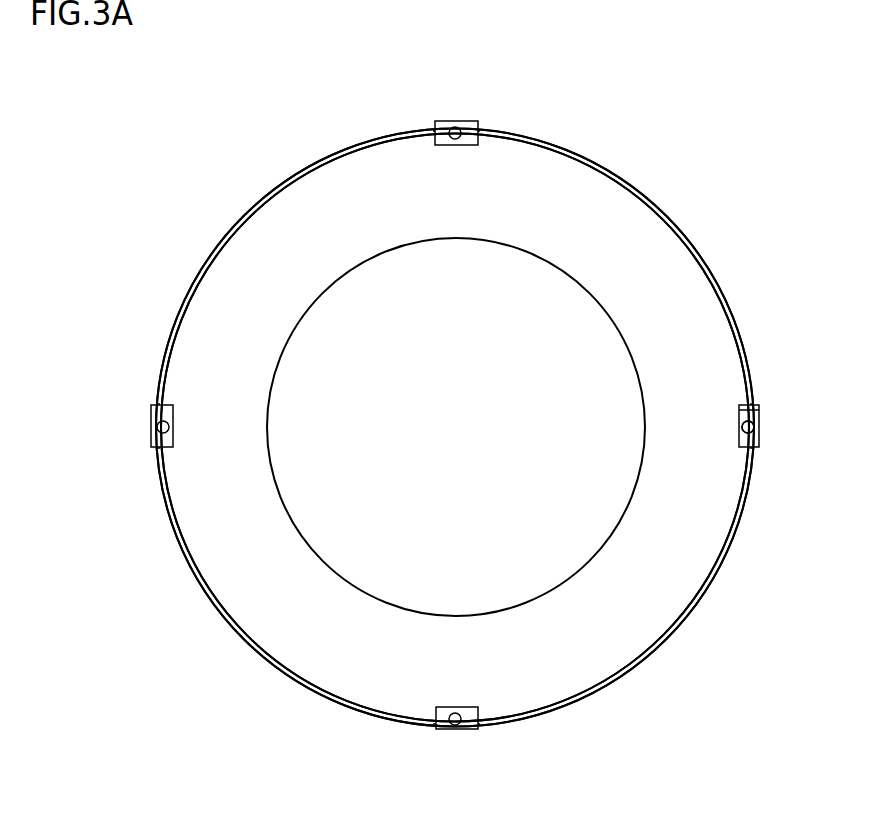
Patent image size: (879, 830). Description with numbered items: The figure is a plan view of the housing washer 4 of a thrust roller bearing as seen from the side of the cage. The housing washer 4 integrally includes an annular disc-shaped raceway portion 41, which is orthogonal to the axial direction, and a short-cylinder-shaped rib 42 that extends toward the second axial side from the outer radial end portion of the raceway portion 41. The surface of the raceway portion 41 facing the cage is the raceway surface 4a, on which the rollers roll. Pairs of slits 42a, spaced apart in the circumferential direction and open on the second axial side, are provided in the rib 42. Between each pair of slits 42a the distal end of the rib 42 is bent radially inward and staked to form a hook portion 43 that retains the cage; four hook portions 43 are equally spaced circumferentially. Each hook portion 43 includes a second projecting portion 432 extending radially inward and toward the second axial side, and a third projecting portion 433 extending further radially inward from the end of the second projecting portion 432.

The housing washer 4 is at (246, 149).
The raceway surface 4a is at (617, 208).
The raceway portion 41 is at (587, 188).
The rib 42 is at (657, 201).
The slits 42a is at (436, 126).
The hook portions 43 is at (455, 122).
The second projecting portion 432 is at (740, 410).
The third projecting portion 433 is at (742, 428).